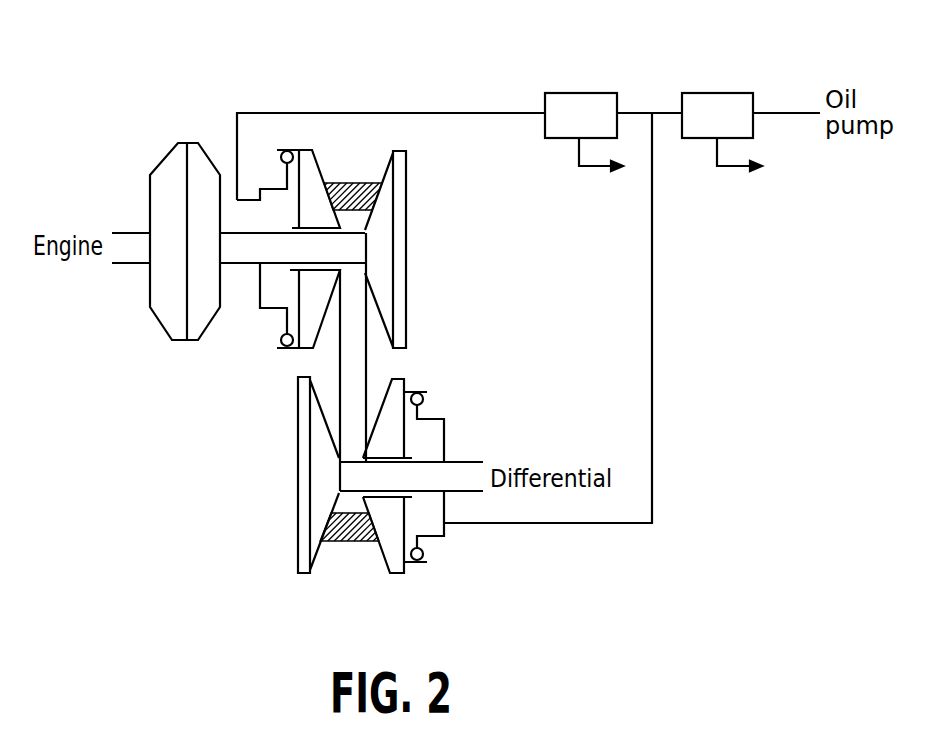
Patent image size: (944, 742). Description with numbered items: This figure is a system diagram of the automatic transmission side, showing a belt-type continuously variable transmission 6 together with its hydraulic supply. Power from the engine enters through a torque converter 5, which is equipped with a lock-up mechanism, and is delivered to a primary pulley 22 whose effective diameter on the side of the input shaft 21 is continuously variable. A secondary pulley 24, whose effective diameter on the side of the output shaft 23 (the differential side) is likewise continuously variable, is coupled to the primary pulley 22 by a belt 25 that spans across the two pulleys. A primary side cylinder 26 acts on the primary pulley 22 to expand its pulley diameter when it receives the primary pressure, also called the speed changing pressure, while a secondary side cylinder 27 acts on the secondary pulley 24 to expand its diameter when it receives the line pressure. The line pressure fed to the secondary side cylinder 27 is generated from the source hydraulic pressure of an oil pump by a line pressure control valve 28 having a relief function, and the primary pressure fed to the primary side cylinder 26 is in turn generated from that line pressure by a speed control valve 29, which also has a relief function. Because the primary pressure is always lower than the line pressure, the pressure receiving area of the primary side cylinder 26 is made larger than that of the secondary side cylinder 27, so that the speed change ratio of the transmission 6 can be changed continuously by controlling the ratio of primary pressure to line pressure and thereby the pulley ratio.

The torque converter 5 is at (179, 137).
The continuously variable transmission 6 is at (455, 308).
The input shaft 21 is at (233, 266).
The primary pulley 22 is at (408, 177).
The output shaft 23 is at (465, 461).
The secondary pulley 24 is at (297, 483).
The belt 25 is at (368, 358).
The primary side cylinder 26 is at (275, 297).
The secondary side cylinder 27 is at (433, 530).
The line pressure control valve 28 is at (714, 93).
The speed control valve 29 is at (578, 93).